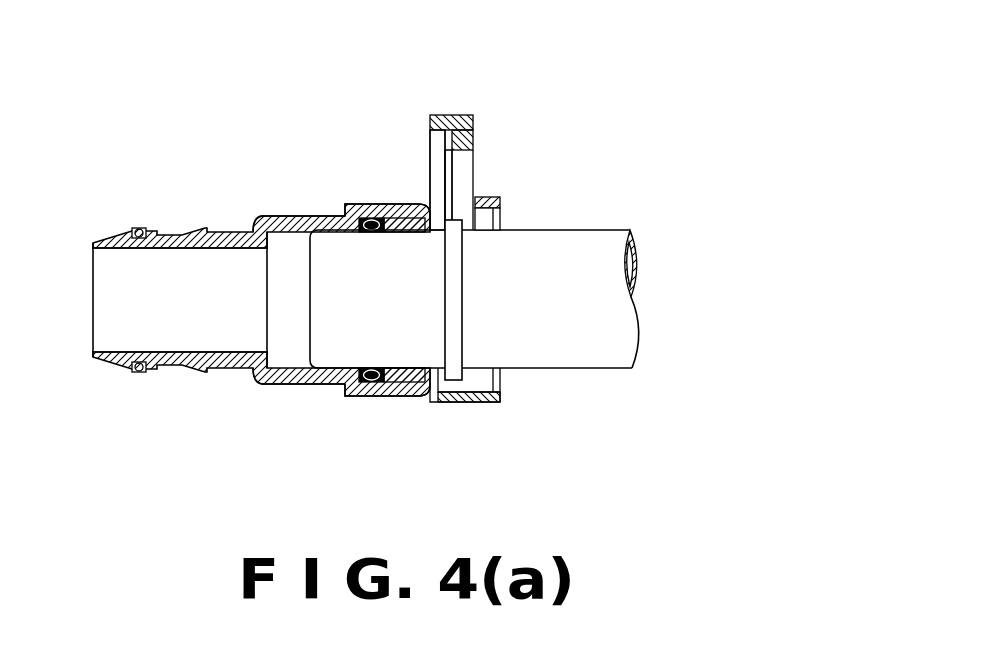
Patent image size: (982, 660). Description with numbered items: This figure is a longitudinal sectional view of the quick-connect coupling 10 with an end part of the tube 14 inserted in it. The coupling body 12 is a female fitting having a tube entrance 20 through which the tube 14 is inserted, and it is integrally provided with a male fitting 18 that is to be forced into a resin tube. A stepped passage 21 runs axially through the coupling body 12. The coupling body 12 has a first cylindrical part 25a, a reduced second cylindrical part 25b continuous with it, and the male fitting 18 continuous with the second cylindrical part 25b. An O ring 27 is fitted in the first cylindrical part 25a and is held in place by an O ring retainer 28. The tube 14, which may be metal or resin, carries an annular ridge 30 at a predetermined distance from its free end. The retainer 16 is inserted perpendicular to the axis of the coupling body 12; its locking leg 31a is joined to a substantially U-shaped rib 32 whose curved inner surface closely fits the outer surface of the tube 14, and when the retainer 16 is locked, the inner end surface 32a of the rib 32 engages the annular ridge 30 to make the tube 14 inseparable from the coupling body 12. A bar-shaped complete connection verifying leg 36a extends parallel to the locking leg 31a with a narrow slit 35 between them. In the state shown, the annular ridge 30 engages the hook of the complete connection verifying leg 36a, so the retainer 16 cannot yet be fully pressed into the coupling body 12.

The quick-connect coupling 10 is at (248, 112).
The coupling body 12 is at (281, 390).
The tube 14 is at (617, 341).
The retainer 16 is at (522, 157).
The male fitting 18 is at (176, 231).
The tube entrance 20 is at (501, 218).
The stepped passage 21 is at (218, 318).
The first cylindrical part 25a is at (365, 212).
The second cylindrical part 25b is at (274, 216).
The O ring 27 is at (345, 394).
The O ring retainer 28 is at (397, 380).
The annular ridge 30 is at (455, 300).
The locking leg 31a is at (466, 186).
The U-shaped rib 32 is at (468, 114).
The inner end surface 32a is at (433, 114).
The slit 35 is at (450, 163).
The complete connection verifying leg 36a is at (429, 172).